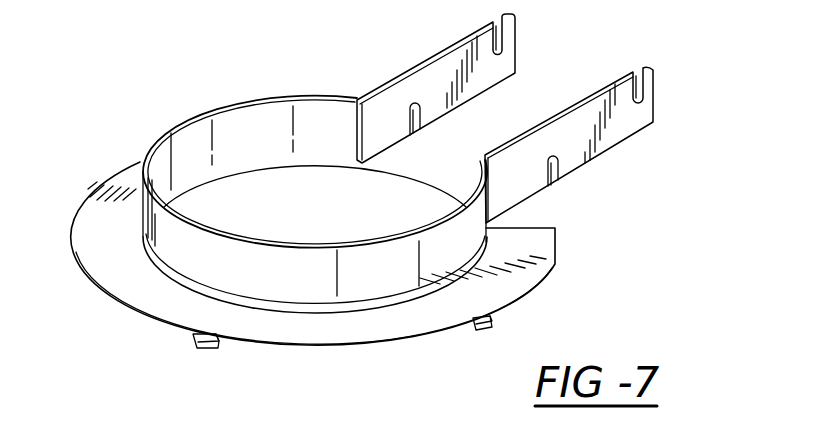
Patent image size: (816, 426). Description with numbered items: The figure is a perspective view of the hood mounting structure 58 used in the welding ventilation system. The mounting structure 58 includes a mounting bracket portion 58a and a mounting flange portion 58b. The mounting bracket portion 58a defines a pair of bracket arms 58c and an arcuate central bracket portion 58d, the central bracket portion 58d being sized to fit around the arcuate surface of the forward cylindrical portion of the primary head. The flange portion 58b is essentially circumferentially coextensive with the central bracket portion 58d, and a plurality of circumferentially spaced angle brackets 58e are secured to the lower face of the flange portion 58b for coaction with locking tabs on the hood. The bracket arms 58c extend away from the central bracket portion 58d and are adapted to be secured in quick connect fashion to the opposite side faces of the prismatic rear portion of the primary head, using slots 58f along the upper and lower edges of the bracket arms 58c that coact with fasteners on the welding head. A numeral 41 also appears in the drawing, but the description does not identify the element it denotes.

The mounting structure 58 is at (133, 126).
The mounting bracket portion 58a is at (333, 93).
The mounting flange portion 58b is at (565, 254).
The bracket arms 58c is at (437, 56).
The arcuate central bracket portion 58d is at (268, 237).
The angle brackets 58e is at (485, 332).
The slots 58f is at (543, 184).
The element 41 is at (296, 0).